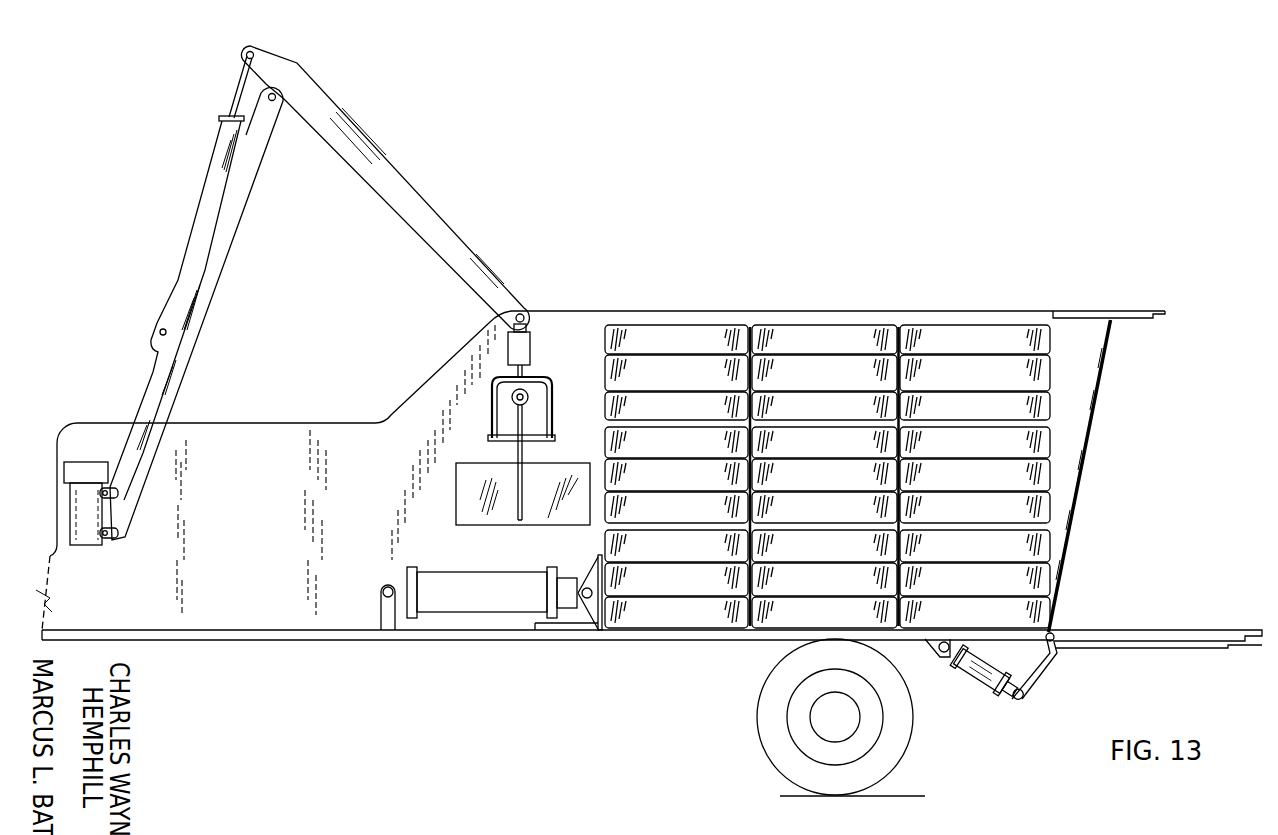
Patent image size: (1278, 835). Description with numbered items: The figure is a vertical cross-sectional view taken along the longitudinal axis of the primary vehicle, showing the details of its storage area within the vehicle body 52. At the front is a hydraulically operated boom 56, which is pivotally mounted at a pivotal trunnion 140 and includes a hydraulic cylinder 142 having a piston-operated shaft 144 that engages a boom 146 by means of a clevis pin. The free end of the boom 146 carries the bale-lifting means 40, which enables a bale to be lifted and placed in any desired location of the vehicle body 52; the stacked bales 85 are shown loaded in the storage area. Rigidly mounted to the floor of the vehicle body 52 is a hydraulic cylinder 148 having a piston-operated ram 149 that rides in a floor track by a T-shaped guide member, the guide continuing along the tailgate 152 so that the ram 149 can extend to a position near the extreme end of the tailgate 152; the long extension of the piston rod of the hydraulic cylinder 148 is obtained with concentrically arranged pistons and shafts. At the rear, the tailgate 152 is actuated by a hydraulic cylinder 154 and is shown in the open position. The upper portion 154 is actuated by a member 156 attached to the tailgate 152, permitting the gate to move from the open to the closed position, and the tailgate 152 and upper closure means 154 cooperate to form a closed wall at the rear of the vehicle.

The bale-lifting means 40 is at (557, 428).
The vehicle body 52 is at (404, 388).
The hydraulically operated boom 56 is at (286, 148).
The bales 85 is at (827, 476).
The pivotal trunnion 140 is at (91, 545).
The hydraulic cylinder 142 is at (212, 165).
The piston-operated shaft 144 is at (238, 86).
The boom 146 is at (413, 186).
The hydraulic cylinder 148 is at (479, 598).
The piston-operated ram 149 is at (583, 578).
The tailgate 152 is at (1131, 625).
The hydraulic cylinder / upper closure means 154 is at (1146, 306).
The member 156 is at (1100, 387).